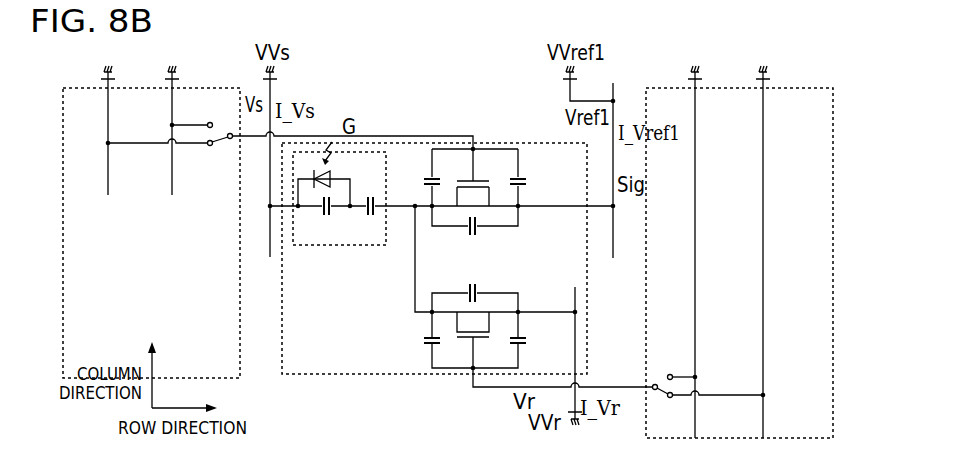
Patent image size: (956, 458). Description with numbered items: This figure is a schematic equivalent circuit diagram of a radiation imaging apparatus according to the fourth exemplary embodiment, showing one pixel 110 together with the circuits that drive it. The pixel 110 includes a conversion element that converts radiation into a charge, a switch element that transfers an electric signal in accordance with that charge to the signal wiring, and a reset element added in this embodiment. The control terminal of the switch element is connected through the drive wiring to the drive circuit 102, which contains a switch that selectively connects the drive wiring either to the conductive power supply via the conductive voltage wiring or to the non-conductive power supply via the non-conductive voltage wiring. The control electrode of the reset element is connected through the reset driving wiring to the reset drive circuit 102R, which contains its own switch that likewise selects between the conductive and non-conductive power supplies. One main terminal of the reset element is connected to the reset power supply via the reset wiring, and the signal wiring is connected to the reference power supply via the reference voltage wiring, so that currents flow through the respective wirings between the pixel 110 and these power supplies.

The drive circuit 102 is at (215, 88).
The reset drive circuit 102R is at (662, 88).
The pixel 110 is at (589, 345).